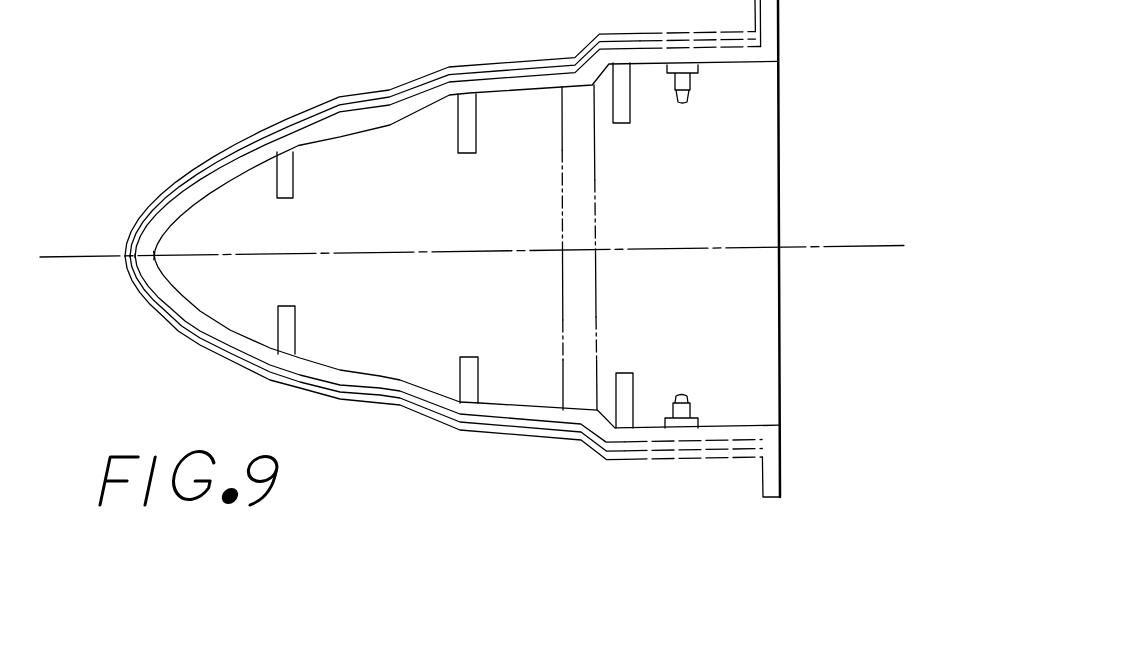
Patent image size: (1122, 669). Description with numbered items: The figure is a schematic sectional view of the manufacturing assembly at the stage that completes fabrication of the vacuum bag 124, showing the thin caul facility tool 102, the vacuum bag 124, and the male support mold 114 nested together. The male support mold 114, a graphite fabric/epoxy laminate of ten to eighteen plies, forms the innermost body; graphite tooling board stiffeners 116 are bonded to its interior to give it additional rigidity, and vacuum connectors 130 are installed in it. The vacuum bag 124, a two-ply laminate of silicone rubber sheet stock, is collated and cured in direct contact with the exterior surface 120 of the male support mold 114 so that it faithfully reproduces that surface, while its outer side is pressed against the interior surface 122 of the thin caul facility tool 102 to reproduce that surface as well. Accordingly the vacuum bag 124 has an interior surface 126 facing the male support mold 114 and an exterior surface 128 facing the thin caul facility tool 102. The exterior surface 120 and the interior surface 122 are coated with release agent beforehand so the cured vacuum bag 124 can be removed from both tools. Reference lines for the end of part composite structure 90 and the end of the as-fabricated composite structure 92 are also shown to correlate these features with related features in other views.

The end of part (EOP) composite structure line 90 is at (563, 270).
The EOP of the as-fabricated composite structure line 92 is at (597, 217).
The thin caul facility tool 102 is at (345, 100).
The male support mold 114 is at (230, 157).
The graphite tooling board stiffeners 116 is at (293, 185).
The exterior surface of the male support mold 120 is at (413, 248).
The interior surface of the thin caul facility tool 122 is at (290, 125).
The vacuum bag 124 is at (142, 297).
The interior surface of the vacuum bag 126 is at (173, 320).
The exterior surface of the vacuum bag 128 is at (217, 353).
The vacuum connectors 130 is at (690, 85).